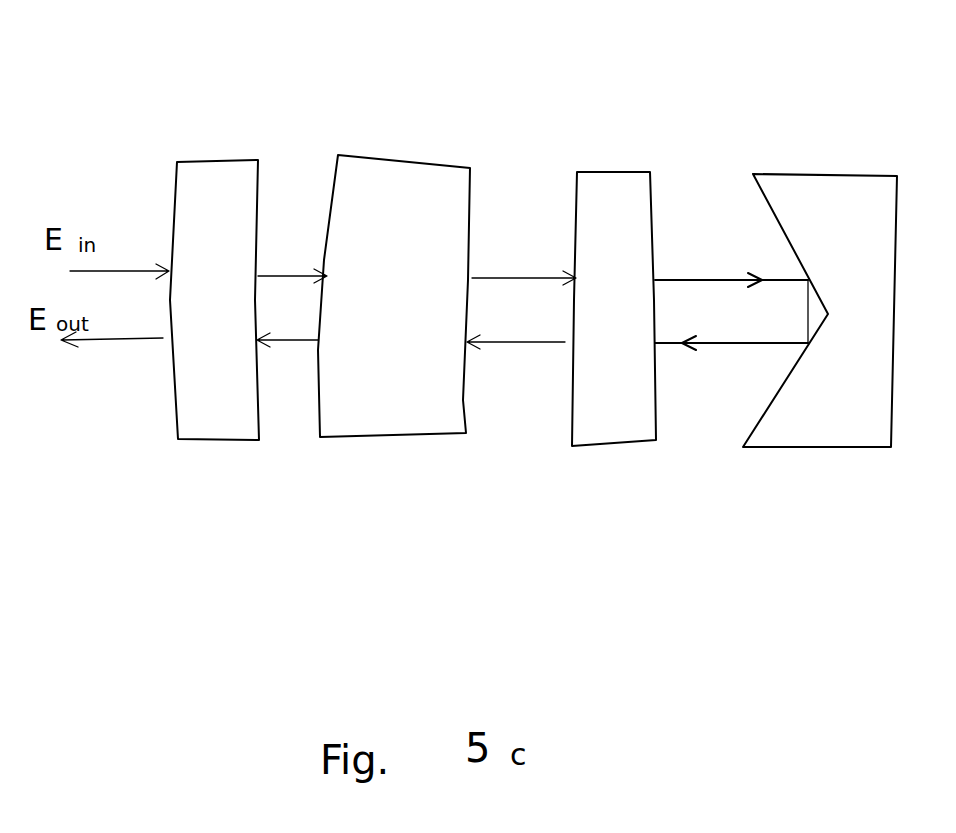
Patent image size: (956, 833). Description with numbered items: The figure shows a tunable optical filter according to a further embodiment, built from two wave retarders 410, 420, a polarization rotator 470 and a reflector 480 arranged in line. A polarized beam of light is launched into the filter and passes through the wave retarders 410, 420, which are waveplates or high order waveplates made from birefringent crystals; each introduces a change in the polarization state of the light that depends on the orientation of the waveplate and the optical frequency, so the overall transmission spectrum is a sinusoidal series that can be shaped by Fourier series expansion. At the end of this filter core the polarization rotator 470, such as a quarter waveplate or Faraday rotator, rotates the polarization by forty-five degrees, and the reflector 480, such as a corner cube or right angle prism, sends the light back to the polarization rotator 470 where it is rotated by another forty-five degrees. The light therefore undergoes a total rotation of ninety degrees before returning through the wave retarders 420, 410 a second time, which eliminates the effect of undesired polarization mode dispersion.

The wave retarder 410 is at (212, 161).
The wave retarder 420 is at (397, 163).
The polarization rotator 470 is at (614, 165).
The reflector 480 is at (800, 174).